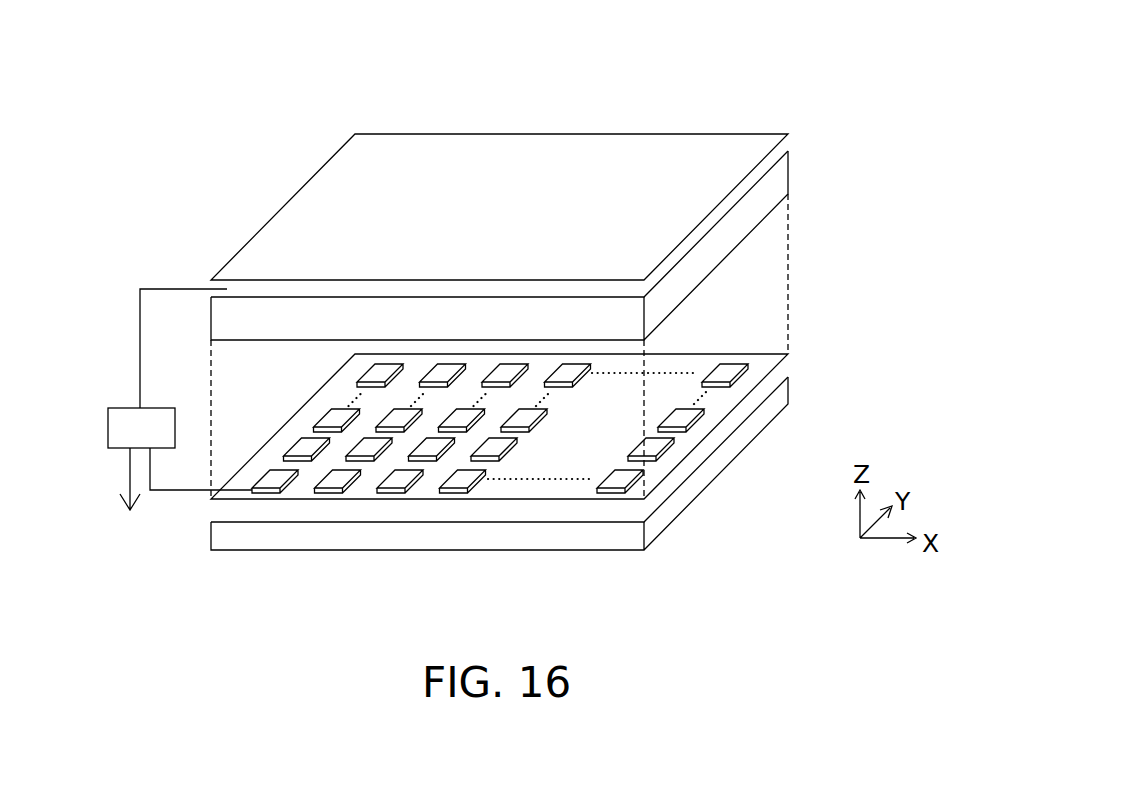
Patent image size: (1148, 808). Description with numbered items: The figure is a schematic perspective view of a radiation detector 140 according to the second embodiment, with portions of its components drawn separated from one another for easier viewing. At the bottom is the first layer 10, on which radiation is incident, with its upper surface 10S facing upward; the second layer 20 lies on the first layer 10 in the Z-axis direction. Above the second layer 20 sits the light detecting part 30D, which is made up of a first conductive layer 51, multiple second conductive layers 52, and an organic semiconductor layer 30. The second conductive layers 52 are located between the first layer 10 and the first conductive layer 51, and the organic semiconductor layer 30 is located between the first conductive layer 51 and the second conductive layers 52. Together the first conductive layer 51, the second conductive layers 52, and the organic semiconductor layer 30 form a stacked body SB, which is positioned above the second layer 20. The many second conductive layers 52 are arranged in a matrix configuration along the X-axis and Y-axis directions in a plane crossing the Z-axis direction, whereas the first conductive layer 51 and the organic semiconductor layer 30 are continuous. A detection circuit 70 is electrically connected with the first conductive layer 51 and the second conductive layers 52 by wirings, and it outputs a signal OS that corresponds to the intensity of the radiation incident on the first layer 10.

The radiation detector 140 is at (837, 73).
The first conductive layer 51 is at (790, 150).
The organic semiconductor layer 30 is at (782, 177).
The stacked body SB is at (857, 142).
The second conductive layer 52 is at (272, 482).
The light detecting part 30D is at (819, 387).
The second layer 20 is at (507, 512).
The first layer 10 is at (588, 533).
The upper surface of second substrate 10S is at (628, 564).
The detection circuit 70 is at (130, 408).
The signal OS is at (128, 472).